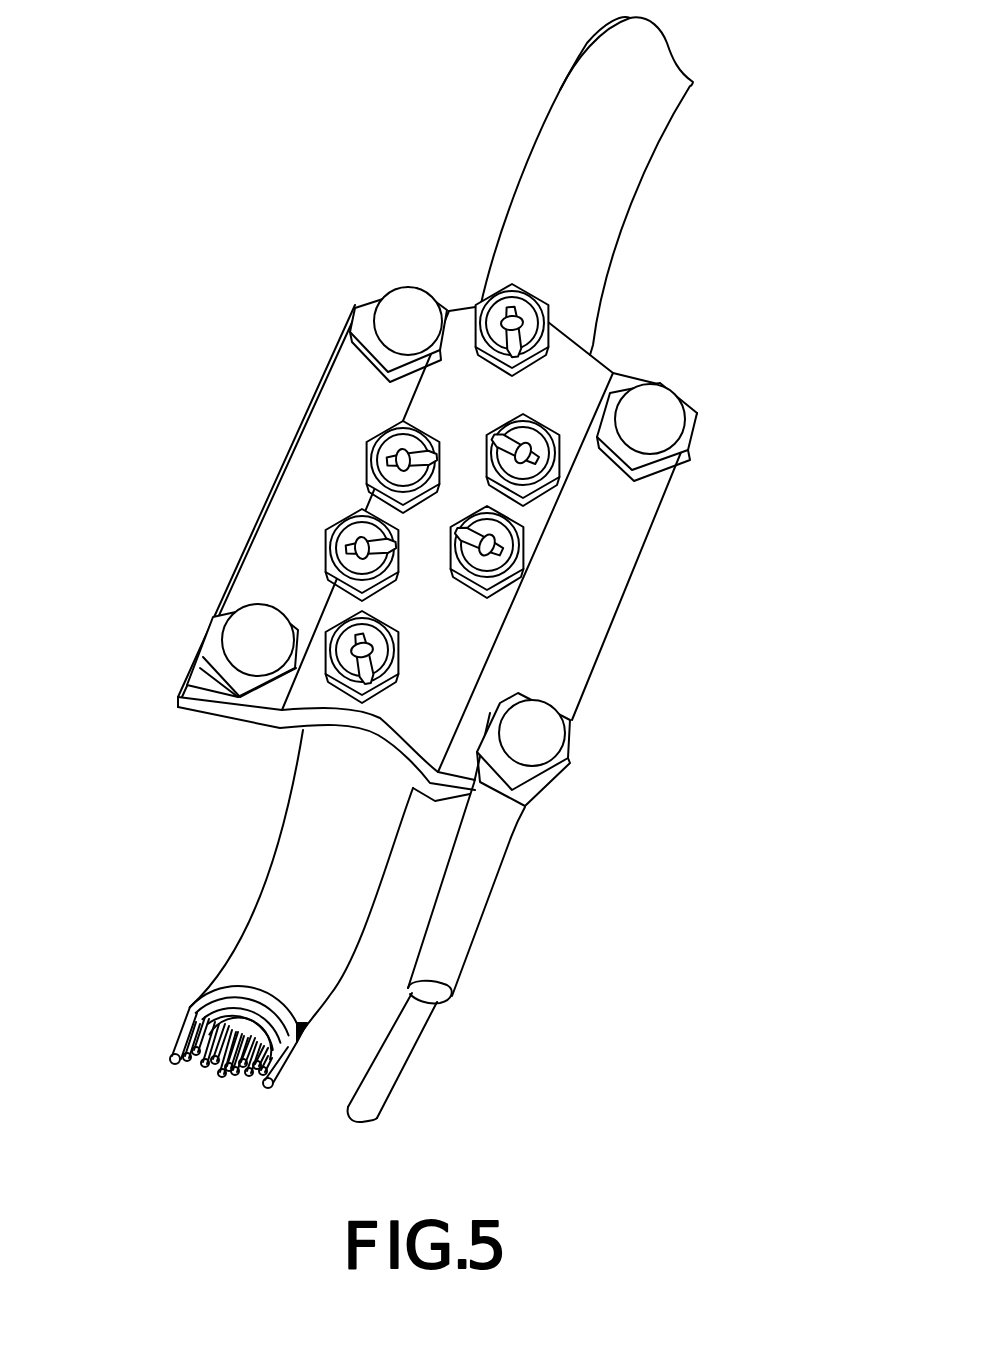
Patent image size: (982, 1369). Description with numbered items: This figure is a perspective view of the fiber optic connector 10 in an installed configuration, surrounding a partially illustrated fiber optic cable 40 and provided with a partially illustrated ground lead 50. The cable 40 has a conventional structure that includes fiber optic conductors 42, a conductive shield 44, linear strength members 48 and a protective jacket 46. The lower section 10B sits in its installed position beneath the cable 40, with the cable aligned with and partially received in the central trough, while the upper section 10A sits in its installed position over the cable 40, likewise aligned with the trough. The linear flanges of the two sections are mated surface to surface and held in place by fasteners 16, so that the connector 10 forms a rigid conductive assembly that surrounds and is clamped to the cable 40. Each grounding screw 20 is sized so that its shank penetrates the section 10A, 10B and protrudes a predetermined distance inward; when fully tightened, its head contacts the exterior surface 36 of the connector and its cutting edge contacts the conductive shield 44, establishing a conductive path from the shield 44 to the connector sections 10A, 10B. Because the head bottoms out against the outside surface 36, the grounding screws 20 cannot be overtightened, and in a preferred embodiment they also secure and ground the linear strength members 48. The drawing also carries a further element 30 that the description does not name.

The fiber optic connector 10 is at (740, 453).
The upper section 10A is at (657, 590).
The lower section 10B is at (197, 740).
The fasteners 16 is at (385, 306).
The grounding screw 20 is at (348, 527).
The terminal screw 30 is at (517, 583).
The exterior surface 36 is at (453, 418).
The fiber optic cable 40 is at (520, 173).
The fiber optic conductors 42 is at (227, 1075).
The conductive shield 44 is at (293, 1037).
The protective jacket 46 is at (187, 1013).
The linear strength members 48 is at (170, 1058).
The ground lead 50 is at (487, 908).